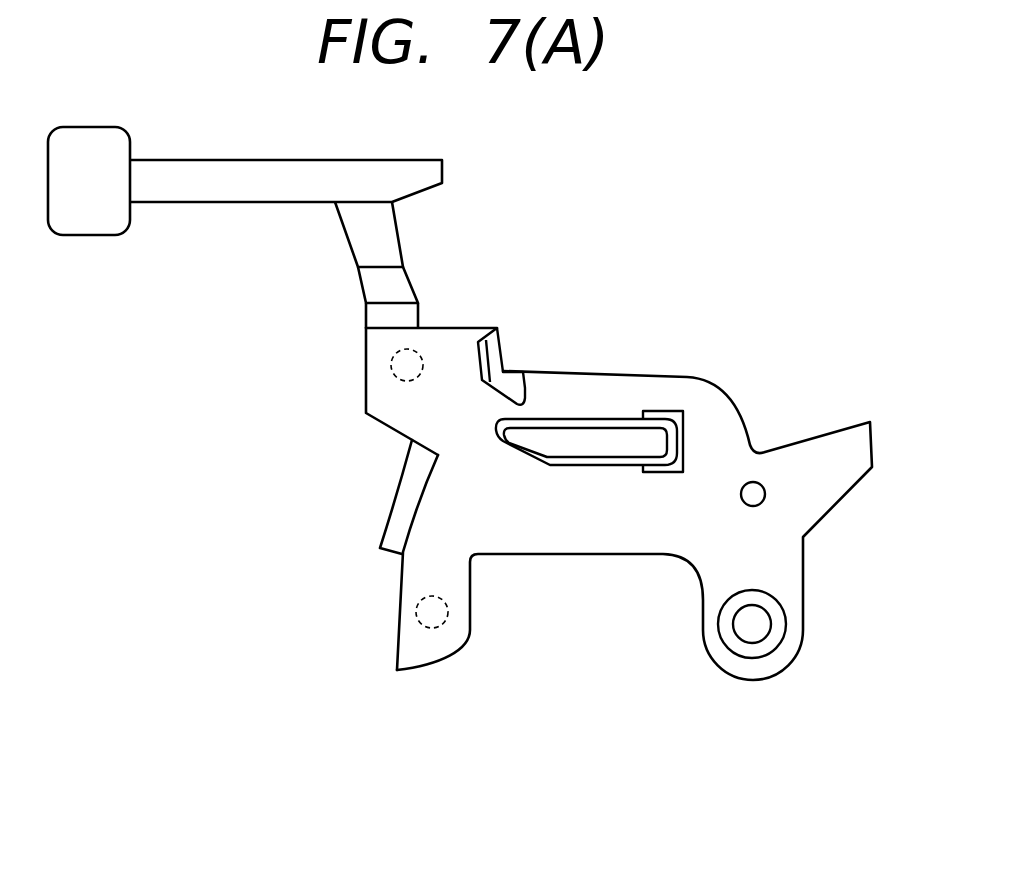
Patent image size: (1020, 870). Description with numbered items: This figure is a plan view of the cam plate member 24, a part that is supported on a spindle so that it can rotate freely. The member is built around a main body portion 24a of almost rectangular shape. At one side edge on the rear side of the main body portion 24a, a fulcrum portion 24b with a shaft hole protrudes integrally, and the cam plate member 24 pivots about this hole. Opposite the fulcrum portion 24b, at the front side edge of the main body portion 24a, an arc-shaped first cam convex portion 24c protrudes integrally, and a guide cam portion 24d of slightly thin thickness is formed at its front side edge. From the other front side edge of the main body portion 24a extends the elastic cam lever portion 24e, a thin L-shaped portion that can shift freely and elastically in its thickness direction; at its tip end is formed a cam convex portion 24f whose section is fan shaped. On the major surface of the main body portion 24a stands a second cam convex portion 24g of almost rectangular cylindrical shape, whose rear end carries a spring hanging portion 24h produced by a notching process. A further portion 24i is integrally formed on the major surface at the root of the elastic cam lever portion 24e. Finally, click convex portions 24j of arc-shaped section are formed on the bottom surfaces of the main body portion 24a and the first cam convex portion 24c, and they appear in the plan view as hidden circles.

The cam plate member 24 is at (728, 136).
The main body portion 24a is at (580, 527).
The fulcrum portion 24b is at (758, 648).
The first cam convex portion 24c is at (423, 570).
The guide cam portion 24d is at (398, 512).
The elastic cam lever portion 24e is at (243, 195).
The cam convex portion 24f is at (95, 224).
The second cam convex portion 24g is at (585, 423).
The spring hanging portion 24h is at (678, 418).
The engaging tab 24i is at (513, 382).
The click convex portion 24j is at (390, 360).